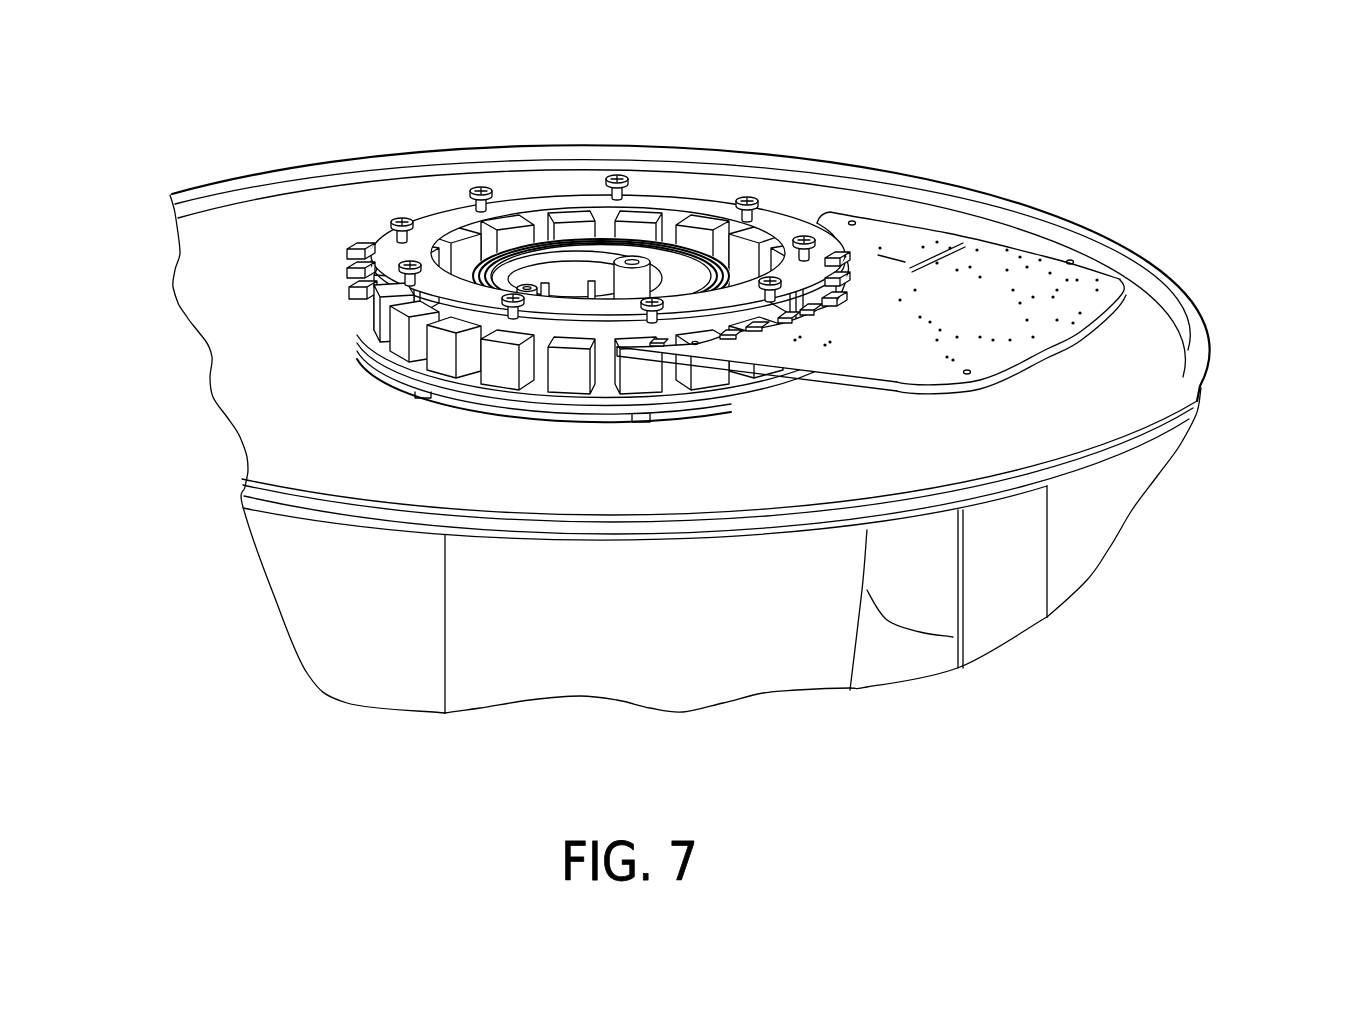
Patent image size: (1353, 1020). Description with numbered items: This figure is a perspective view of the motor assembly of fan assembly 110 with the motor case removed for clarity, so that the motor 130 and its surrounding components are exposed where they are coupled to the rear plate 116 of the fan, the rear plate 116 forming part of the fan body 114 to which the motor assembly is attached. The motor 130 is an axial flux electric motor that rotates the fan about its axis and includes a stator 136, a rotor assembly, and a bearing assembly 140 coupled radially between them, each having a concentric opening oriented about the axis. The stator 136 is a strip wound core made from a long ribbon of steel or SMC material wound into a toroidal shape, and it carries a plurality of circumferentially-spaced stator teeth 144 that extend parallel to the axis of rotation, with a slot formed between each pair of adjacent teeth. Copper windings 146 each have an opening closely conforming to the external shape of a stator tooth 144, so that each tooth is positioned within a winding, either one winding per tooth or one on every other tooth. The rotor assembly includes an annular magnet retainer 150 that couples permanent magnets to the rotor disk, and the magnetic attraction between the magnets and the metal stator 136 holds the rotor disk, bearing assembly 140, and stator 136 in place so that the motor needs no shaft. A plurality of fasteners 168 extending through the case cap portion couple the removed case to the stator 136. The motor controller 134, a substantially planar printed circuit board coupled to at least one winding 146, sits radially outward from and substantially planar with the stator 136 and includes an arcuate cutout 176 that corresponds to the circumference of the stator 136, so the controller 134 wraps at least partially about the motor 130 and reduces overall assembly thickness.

The fan assembly 110 is at (1032, 155).
The housing 114 is at (342, 620).
The rear plate 116 is at (1140, 374).
The motor 130 is at (478, 331).
The motor controller 134 is at (1082, 296).
The stator 136 is at (355, 244).
The bearing assembly 140 is at (678, 262).
The stator teeth 144 is at (487, 360).
The copper windings 146 is at (355, 320).
The annular magnet retainer 150 is at (505, 402).
The fasteners 168 is at (620, 176).
The arcuate cutout 176 is at (818, 202).